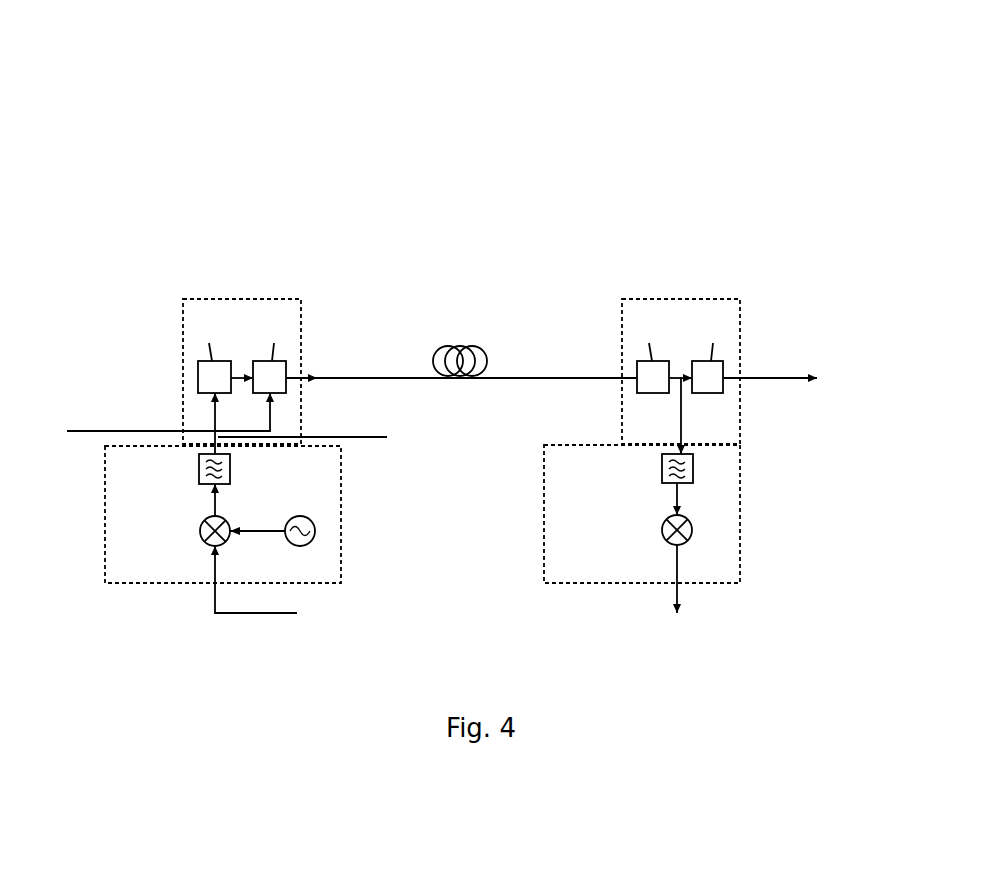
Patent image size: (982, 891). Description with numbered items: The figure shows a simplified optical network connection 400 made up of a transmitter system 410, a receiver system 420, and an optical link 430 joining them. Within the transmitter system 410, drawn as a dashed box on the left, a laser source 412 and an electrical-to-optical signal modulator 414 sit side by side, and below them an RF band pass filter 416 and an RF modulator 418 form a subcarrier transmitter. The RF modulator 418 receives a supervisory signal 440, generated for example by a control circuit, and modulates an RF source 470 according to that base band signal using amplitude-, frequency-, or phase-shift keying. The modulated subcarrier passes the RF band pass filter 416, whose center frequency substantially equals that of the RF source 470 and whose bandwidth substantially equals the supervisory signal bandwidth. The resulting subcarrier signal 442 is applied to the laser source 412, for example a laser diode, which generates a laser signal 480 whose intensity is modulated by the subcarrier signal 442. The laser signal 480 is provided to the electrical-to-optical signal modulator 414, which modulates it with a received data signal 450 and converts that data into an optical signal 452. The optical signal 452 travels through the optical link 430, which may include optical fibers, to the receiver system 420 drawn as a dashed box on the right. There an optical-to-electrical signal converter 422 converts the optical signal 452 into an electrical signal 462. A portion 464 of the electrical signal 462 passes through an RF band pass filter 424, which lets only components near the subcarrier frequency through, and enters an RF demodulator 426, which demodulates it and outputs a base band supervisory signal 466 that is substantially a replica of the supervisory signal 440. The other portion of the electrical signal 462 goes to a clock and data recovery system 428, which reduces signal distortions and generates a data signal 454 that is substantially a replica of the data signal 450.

The optical connection 400 is at (103, 112).
The transmitter system 410 is at (302, 337).
The laser source 412 is at (211, 347).
The electrical-to-optical signal modulator 414 is at (273, 347).
The RF band pass filter 416 is at (197, 467).
The RF modulator 418 is at (197, 531).
The receiver system 420 is at (740, 330).
The optical-to-electrical signal converter 422 is at (650, 347).
The RF band pass filter 424 is at (658, 468).
The RF demodulator 426 is at (658, 530).
The clock and data recovery system 428 is at (713, 347).
The optical link 430 is at (488, 358).
The supervisory signal 440 is at (285, 587).
The subcarrier signal 442 is at (334, 437).
The data signal 450 is at (100, 430).
The optical signal 452 is at (370, 375).
The data signal 454 is at (772, 375).
The electrical signal 462 is at (673, 371).
The portion of the signal 464 is at (681, 422).
The base band supervisory signal 466 is at (677, 565).
The RF source 470 is at (345, 517).
The laser signal 480 is at (242, 375).